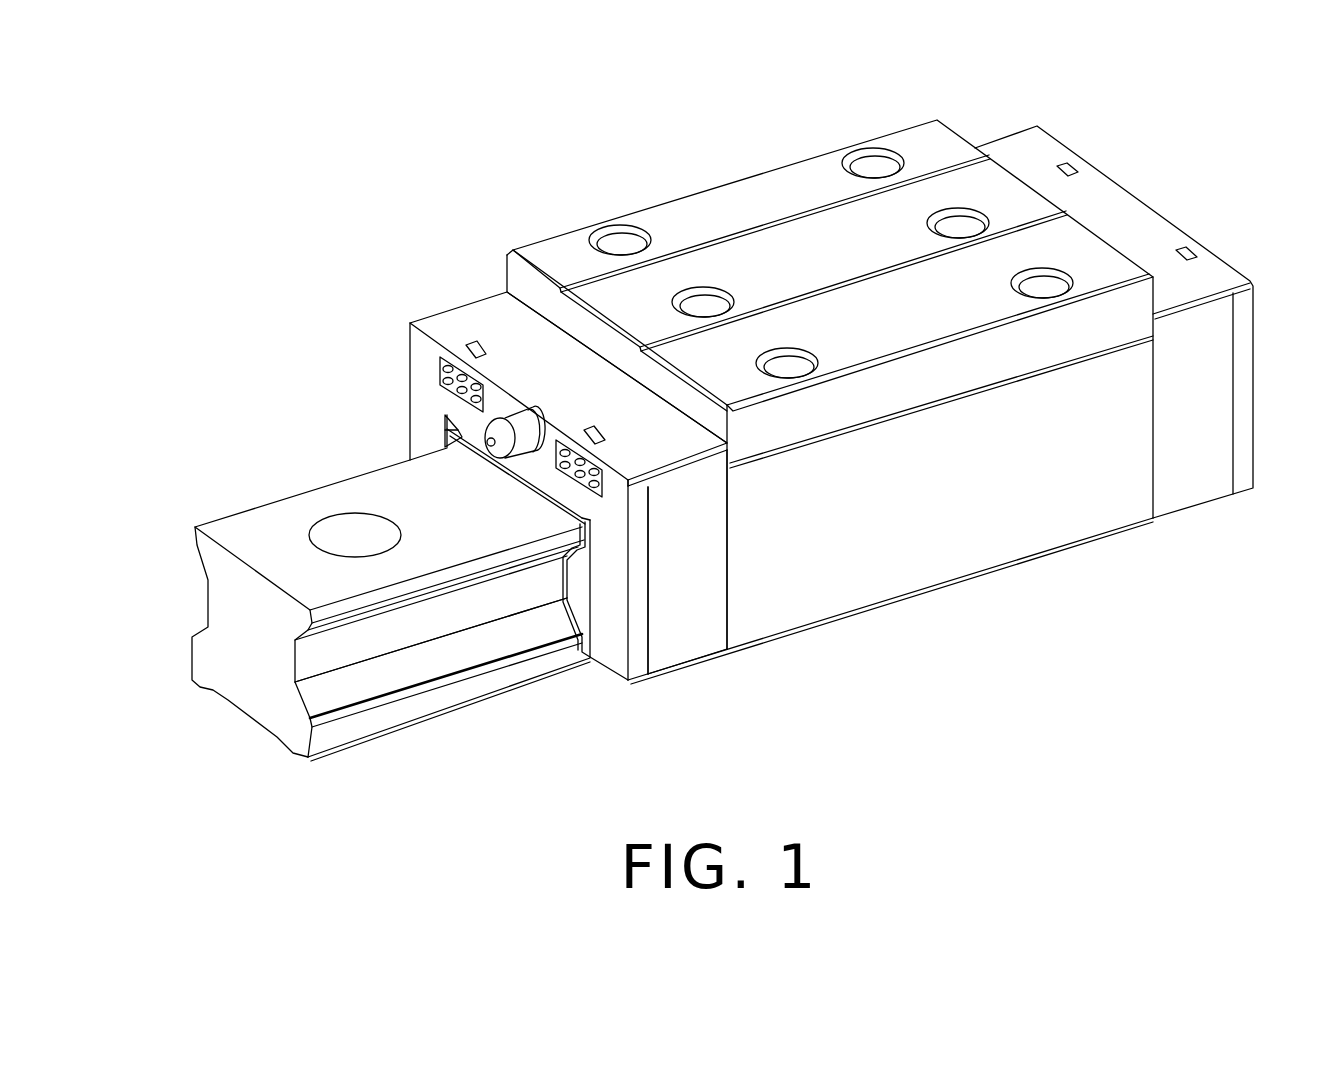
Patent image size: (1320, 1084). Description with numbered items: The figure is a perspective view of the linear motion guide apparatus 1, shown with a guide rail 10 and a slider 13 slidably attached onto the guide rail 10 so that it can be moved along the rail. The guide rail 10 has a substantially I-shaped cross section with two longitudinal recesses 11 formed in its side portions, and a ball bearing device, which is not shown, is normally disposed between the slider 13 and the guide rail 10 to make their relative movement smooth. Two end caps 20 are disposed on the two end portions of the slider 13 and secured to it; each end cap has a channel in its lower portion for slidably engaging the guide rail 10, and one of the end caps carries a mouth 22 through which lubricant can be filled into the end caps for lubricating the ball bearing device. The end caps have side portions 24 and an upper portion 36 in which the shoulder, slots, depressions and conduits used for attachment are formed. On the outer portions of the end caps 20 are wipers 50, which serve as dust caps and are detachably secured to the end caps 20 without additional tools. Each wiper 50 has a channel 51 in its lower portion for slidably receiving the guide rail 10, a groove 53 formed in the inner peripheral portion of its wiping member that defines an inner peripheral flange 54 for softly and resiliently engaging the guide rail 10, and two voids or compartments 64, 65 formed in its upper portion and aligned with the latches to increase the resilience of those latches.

The linear motion guide apparatus 1 is at (338, 246).
The guide rail 10 is at (292, 506).
The longitudinal recesses 11 is at (203, 603).
The slider 13 is at (962, 548).
The end caps 20 is at (1190, 488).
The mouth 22 is at (443, 414).
The side portions 24 is at (666, 657).
The upper portion 36 is at (462, 304).
The wipers 50 is at (617, 637).
The channel 51 is at (567, 622).
The groove 53 is at (452, 434).
The inner peripheral flange 54 is at (562, 580).
The compartment 64 is at (432, 364).
The compartment 65 is at (608, 488).